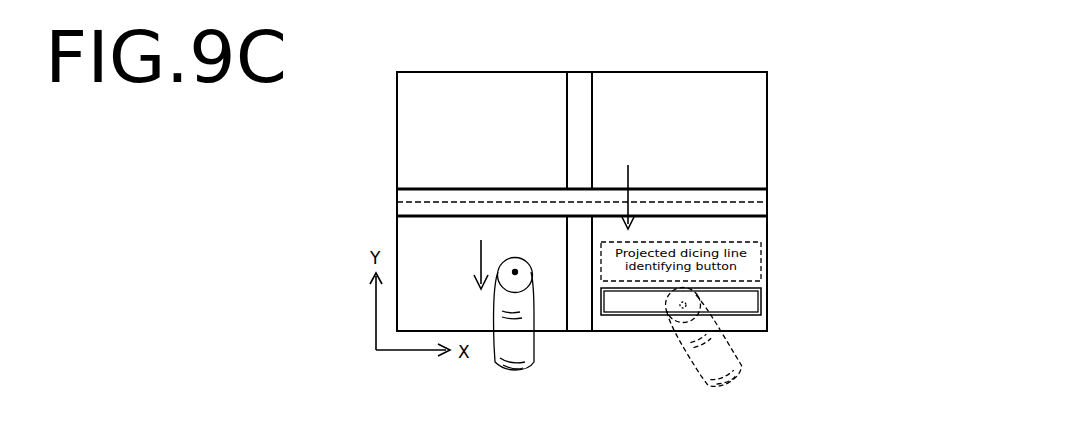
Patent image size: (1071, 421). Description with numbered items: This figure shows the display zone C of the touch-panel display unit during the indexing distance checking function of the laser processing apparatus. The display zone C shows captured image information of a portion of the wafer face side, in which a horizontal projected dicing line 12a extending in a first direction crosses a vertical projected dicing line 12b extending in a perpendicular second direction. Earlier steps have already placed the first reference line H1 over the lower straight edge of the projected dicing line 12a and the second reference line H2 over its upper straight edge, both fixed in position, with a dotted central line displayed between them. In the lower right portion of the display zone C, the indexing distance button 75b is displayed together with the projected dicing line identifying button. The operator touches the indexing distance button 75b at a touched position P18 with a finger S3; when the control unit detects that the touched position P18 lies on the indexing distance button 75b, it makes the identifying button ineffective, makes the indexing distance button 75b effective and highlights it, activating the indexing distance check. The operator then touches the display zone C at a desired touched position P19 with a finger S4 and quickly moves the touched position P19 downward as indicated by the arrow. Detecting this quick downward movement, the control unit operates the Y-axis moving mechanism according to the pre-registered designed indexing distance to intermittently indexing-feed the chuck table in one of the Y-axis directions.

The display zone C is at (481, 71).
The projected dicing line 12b is at (602, 96).
The projected dicing line 12a is at (663, 196).
The second reference line H2 is at (416, 187).
The first reference line H1 is at (410, 217).
The touched position P19 is at (515, 270).
The touched position P18 is at (700, 290).
The indexing distance button 75b is at (761, 300).
The finger S4 is at (533, 357).
The finger S3 is at (742, 361).